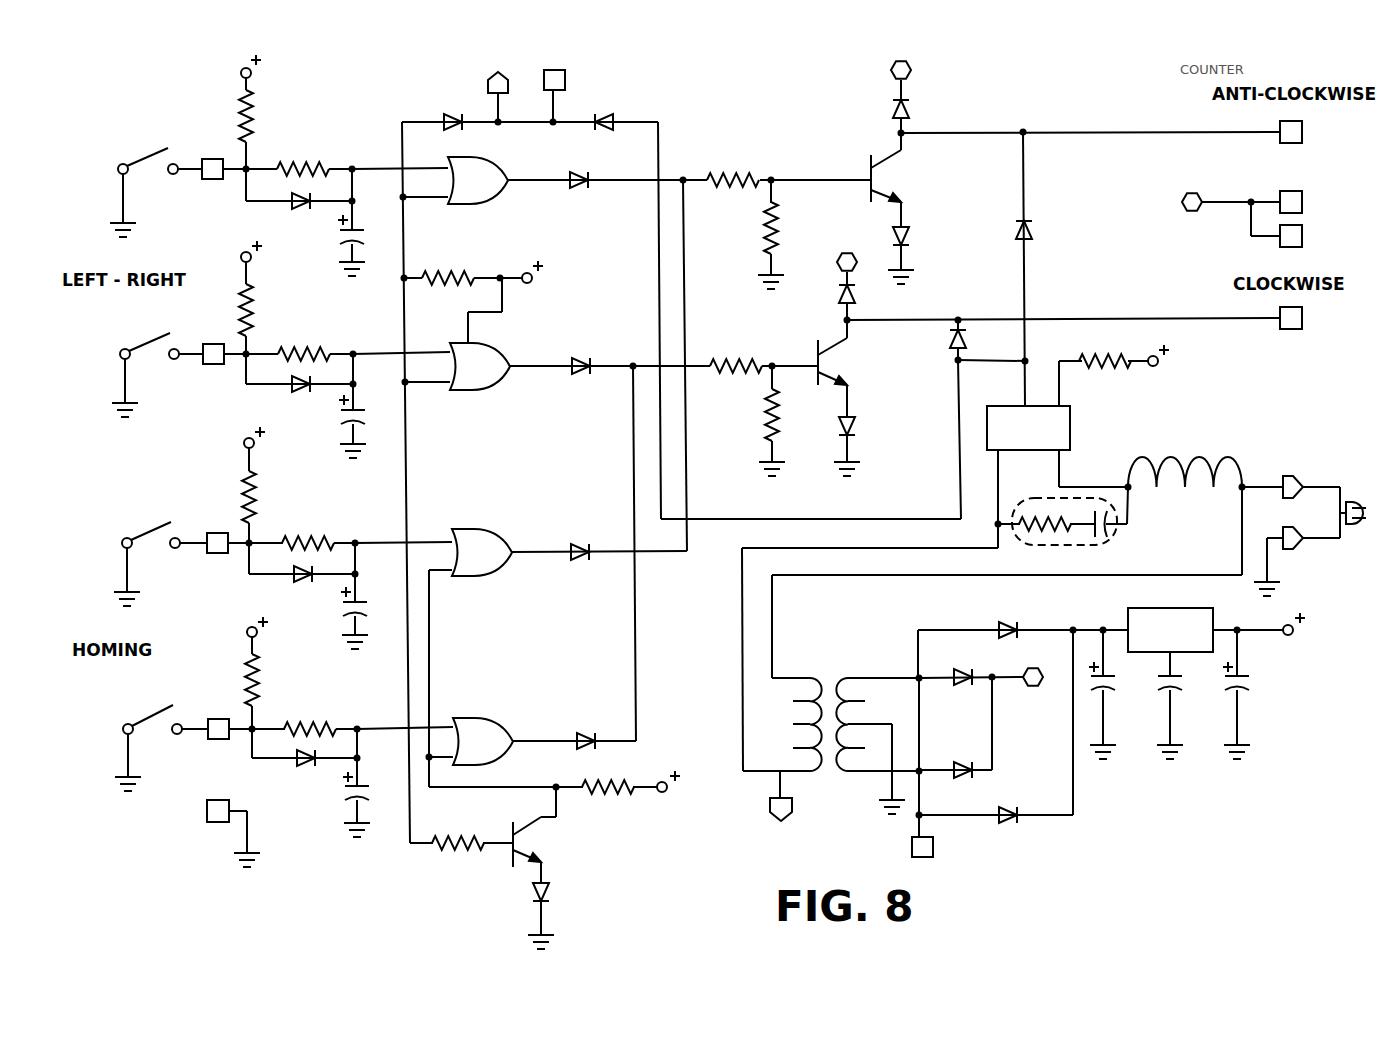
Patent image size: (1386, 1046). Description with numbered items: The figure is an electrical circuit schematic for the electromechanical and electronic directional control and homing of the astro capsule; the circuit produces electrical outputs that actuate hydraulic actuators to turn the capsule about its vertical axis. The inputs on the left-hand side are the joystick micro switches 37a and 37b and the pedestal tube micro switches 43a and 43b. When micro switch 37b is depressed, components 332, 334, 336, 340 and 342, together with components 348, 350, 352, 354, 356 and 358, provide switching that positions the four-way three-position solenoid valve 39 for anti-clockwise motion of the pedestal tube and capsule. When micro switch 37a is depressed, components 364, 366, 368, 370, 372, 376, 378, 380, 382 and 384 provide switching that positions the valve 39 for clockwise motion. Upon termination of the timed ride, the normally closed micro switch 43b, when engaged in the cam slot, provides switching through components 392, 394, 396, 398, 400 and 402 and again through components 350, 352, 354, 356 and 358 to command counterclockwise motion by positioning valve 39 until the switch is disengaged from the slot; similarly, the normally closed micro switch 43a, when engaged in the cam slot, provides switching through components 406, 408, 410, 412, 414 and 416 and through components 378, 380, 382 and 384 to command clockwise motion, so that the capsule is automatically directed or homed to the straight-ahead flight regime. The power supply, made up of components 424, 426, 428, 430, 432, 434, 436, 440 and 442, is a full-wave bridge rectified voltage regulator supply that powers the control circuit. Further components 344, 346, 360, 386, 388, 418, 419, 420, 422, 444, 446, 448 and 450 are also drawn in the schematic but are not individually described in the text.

The joystick micro switch 37a is at (169, 333).
The joystick micro switch 37b is at (168, 148).
The pedestal tube micro switch 43a is at (173, 705).
The pedestal tube micro switch 43b is at (171, 522).
The four-way three-position solenoid valve 39 is at (1303, 138).
The anti-clockwise switching component 332 is at (255, 105).
The anti-clockwise switching component 334 is at (295, 163).
The anti-clockwise switching component 336 is at (305, 208).
The anti-clockwise switching component 340 is at (343, 237).
The anti-clockwise switching component 342 is at (493, 163).
The diode 344 is at (455, 117).
The diode 346 is at (605, 117).
The anti-clockwise output switching component 348 is at (580, 172).
The anti-clockwise output switching component 350 is at (711, 172).
The anti-clockwise output switching component 352 is at (782, 209).
The anti-clockwise output switching component 354 is at (868, 164).
The anti-clockwise output switching component 356 is at (912, 233).
The anti-clockwise output switching component 358 is at (910, 113).
The diode 360 is at (1034, 230).
The clockwise switching component 364 is at (257, 293).
The clockwise switching component 366 is at (293, 349).
The clockwise switching component 368 is at (306, 390).
The clockwise switching component 370 is at (344, 416).
The clockwise switching component 372 is at (496, 351).
The clockwise switching component 376 is at (581, 359).
The clockwise output switching component 378 is at (714, 356).
The clockwise output switching component 380 is at (765, 403).
The clockwise output switching component 382 is at (815, 357).
The clockwise output switching component 384 is at (858, 299).
The diode 386 is at (860, 426).
The diode 388 is at (946, 341).
The counterclockwise homing component 392 is at (262, 476).
The counterclockwise homing component 394 is at (297, 538).
The counterclockwise homing component 396 is at (307, 581).
The counterclockwise homing component 398 is at (345, 609).
The counterclockwise homing component 400 is at (491, 529).
The counterclockwise homing component 402 is at (579, 545).
The clockwise homing component 406 is at (263, 666).
The clockwise homing component 408 is at (301, 722).
The clockwise homing component 410 is at (308, 769).
The clockwise homing component 412 is at (344, 793).
The clockwise homing component 414 is at (498, 719).
The clockwise homing component 416 is at (584, 737).
The resistor 418 is at (441, 838).
The resistor 419 is at (589, 785).
The transistor 420 is at (509, 862).
The diode 422 is at (553, 895).
The power supply component 424 is at (814, 678).
The power supply component 426 is at (964, 673).
The power supply component 428 is at (966, 779).
The power supply component 430 is at (1008, 620).
The power supply component 432 is at (1013, 826).
The power supply component 434 is at (1115, 684).
The power supply component 436 is at (1185, 684).
The power supply component 440 is at (1250, 684).
The power supply component 442 is at (1172, 614).
The RC snubber network 444 is at (1112, 533).
The motor winding / inductor 446 is at (1172, 456).
The triac drive block 448 is at (1072, 426).
The resistor 450 is at (1086, 359).